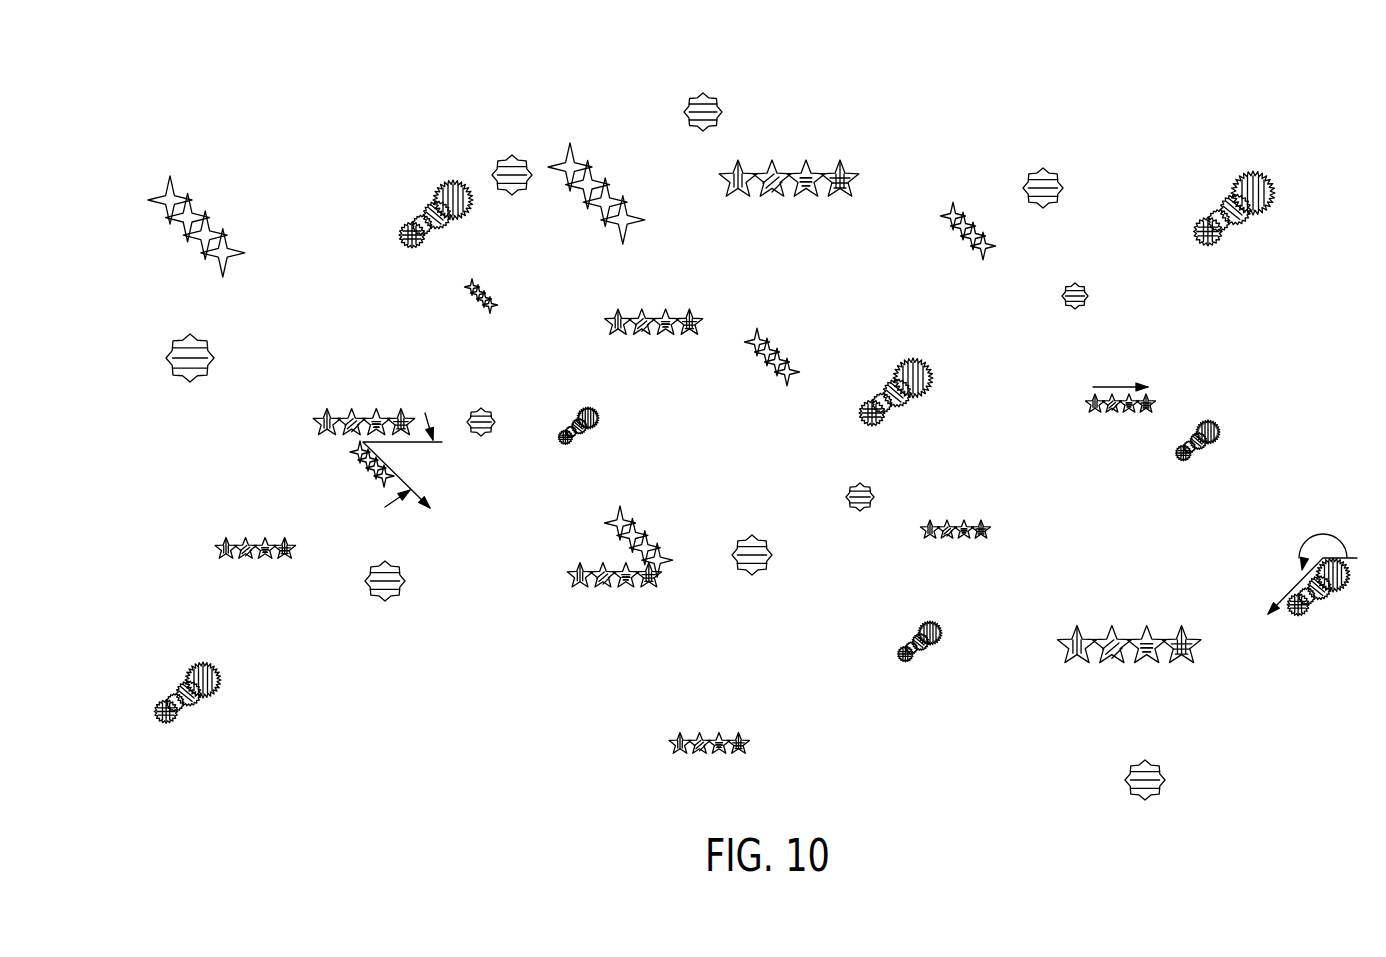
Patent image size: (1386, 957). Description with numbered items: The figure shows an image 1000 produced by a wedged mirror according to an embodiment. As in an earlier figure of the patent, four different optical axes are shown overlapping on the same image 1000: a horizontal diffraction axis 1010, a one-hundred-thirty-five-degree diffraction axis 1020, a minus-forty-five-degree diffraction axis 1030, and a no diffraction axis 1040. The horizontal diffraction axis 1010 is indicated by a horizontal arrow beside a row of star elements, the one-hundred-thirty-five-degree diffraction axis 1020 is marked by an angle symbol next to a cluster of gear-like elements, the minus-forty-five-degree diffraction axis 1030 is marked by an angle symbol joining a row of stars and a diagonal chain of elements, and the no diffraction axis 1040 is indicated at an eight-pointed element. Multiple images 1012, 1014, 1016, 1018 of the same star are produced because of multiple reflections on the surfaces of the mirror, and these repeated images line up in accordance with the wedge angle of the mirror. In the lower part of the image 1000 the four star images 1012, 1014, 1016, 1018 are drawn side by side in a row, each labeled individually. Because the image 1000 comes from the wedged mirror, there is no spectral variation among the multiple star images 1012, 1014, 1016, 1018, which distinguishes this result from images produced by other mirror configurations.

The image 1000 is at (237, 130).
The horizontal diffraction axis 1010 is at (1115, 387).
The image of the star 1012 is at (690, 735).
The image of the star 1014 is at (682, 757).
The image of the star 1016 is at (745, 735).
The image of the star 1018 is at (724, 757).
The 135° diffraction axis 1020 is at (1322, 511).
The −45° diffraction axis 1030 is at (448, 466).
The no diffraction axis 1040 is at (770, 563).